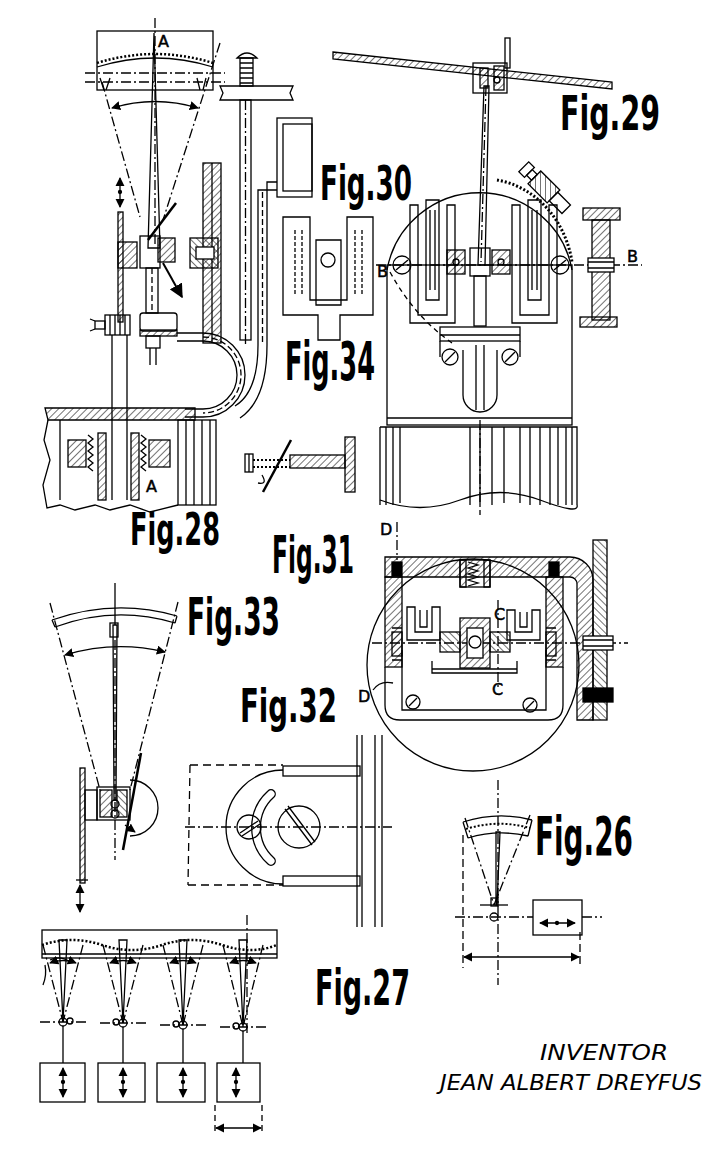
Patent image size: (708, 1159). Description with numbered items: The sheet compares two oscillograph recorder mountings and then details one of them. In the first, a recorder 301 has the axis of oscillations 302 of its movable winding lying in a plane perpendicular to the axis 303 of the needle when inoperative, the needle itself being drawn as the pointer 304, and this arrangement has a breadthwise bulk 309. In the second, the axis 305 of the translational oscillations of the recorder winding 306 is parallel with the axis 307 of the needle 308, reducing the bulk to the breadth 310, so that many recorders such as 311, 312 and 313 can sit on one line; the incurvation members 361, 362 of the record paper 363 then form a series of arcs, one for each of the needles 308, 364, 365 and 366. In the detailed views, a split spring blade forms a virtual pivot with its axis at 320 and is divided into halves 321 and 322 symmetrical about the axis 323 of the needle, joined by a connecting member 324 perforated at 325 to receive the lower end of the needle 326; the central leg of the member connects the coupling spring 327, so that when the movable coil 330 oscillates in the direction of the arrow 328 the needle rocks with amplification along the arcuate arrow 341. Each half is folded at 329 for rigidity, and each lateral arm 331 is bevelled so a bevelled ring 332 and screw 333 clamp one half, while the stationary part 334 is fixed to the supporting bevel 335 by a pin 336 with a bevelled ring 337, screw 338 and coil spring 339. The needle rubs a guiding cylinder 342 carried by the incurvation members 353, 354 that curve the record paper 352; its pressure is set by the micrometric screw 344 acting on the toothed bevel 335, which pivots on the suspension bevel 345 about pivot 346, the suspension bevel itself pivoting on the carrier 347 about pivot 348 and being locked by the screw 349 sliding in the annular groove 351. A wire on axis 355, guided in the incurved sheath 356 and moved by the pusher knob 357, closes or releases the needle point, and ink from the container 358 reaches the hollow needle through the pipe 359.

In FIG. 26, the recorder 301 is at (582, 908).
In FIG. 26, the axis of oscillations 302 is at (557, 917).
In FIG. 26, the axis of the needle 303 is at (502, 792).
In FIG. 26, the pointer 304 is at (502, 872).
In FIG. 27, the axis of translational oscillations 305 is at (244, 1082).
In FIG. 27, the recorder winding 306 is at (260, 1072).
In FIG. 27, the axis of the needle 307 is at (250, 918).
In FIG. 27, the needle 308 is at (255, 992).
In FIG. 26, the bulk of the recorder 309 is at (521, 907).
In FIG. 27, the breadth 310 is at (238, 1119).
In FIG. 27, the recorder 311 is at (159, 1105).
In FIG. 27, the recorder 312 is at (100, 1105).
In FIG. 27, the recorder 313 is at (40, 1105).
In FIG. 29, the axis of the virtual pivot 320 is at (398, 255).
In FIG. 31, the axis of the virtual pivot 320 is at (392, 640).
In FIG. 29, the half of the spring pivot 321 is at (543, 320).
In FIG. 31, the half of the spring pivot 321 is at (526, 616).
In FIG. 29, the half of the spring pivot 322 is at (412, 320).
In FIG. 31, the half of the spring pivot 322 is at (424, 614).
In FIG. 33, the half of the spring pivot 322 is at (128, 850).
In FIG. 28, the axis of the needle 323 is at (153, 36).
In FIG. 29, the axis of the needle 323 is at (478, 455).
In FIG. 29, the connecting member 324 is at (455, 249).
In FIG. 31, the connecting member 324 is at (478, 618).
In FIG. 29, the perforation 325 is at (490, 249).
In FIG. 31, the perforation 325 is at (473, 636).
In FIG. 28, the needle 326 is at (157, 160).
In FIG. 29, the needle 326 is at (487, 215).
In FIG. 33, the needle 326 is at (114, 721).
In FIG. 28, the coupling spring 327 is at (112, 290).
In FIG. 34, the coupling spring 327 is at (328, 278).
In FIG. 29, the coupling spring 327 is at (480, 346).
In FIG. 31, the coupling spring 327 is at (440, 673).
In FIG. 33, the coupling spring 327 is at (80, 850).
In FIG. 28, the arrow 328 is at (116, 193).
In FIG. 33, the arrow 328 is at (78, 900).
In FIG. 28, the fold 329 is at (177, 212).
In FIG. 33, the fold 329 is at (142, 775).
In FIG. 28, the movable coil 330 is at (129, 460).
In FIG. 33, the lateral arm 331 is at (137, 832).
In FIG. 33, the ring 332 is at (108, 822).
In FIG. 33, the screw 333 is at (97, 800).
In FIG. 28, the stationary part 334 is at (274, 475).
In FIG. 29, the stationary part 334 is at (478, 64).
In FIG. 28, the supporting bevel 335 is at (353, 462).
In FIG. 29, the supporting bevel 335 is at (479, 302).
In FIG. 31, the supporting bevel 335 is at (428, 572).
In FIG. 28, the pin 336 is at (340, 452).
In FIG. 31, the pin 336 is at (392, 590).
In FIG. 28, the bevelled ring 337 is at (262, 480).
In FIG. 28, the screw 338 is at (246, 460).
In FIG. 28, the coil spring 339 is at (268, 457).
In FIG. 28, the arcuate arrow 341 is at (118, 130).
In FIG. 28, the guiding cylinder 342 is at (110, 107).
In FIG. 29, the guiding cylinder 342 is at (508, 80).
In FIG. 29, the micrometric screw 344 is at (562, 171).
In FIG. 28, the suspension bevel 345 is at (210, 165).
In FIG. 29, the suspension bevel 345 is at (573, 355).
In FIG. 31, the suspension bevel 345 is at (518, 560).
In FIG. 28, the pivot 346 is at (181, 280).
In FIG. 31, the pivot 346 is at (485, 560).
In FIG. 29, the carrier 347 is at (606, 208).
In FIG. 31, the carrier 347 is at (594, 542).
In FIG. 29, the pivot 348 is at (606, 275).
In FIG. 31, the pivot 348 is at (605, 635).
In FIG. 32, the pivot 348 is at (305, 814).
In FIG. 32, the screw 349 is at (250, 845).
In FIG. 32, the annular groove 351 is at (260, 787).
In FIG. 28, the record paper 352 is at (99, 60).
In FIG. 29, the record paper 352 is at (425, 62).
In FIG. 33, the record paper 352 is at (130, 612).
In FIG. 29, the incurvation member 353 is at (511, 42).
In FIG. 28, the incurvation member 354 is at (198, 85).
In FIG. 29, the incurvation member 354 is at (503, 88).
In FIG. 28, the wire axis 355 is at (250, 48).
In FIG. 28, the incurved sheath 356 is at (232, 384).
In FIG. 28, the pusher knob 357 is at (254, 70).
In FIG. 30, the ink container 358 is at (295, 157).
In FIG. 30, the pipe 359 is at (262, 203).
In FIG. 27, the incurvation member 361 is at (125, 928).
In FIG. 27, the incurvation member 362 is at (51, 976).
In FIG. 27, the record paper 363 is at (277, 946).
In FIG. 27, the needle 364 is at (196, 992).
In FIG. 27, the needle 365 is at (136, 992).
In FIG. 27, the needle 366 is at (78, 992).